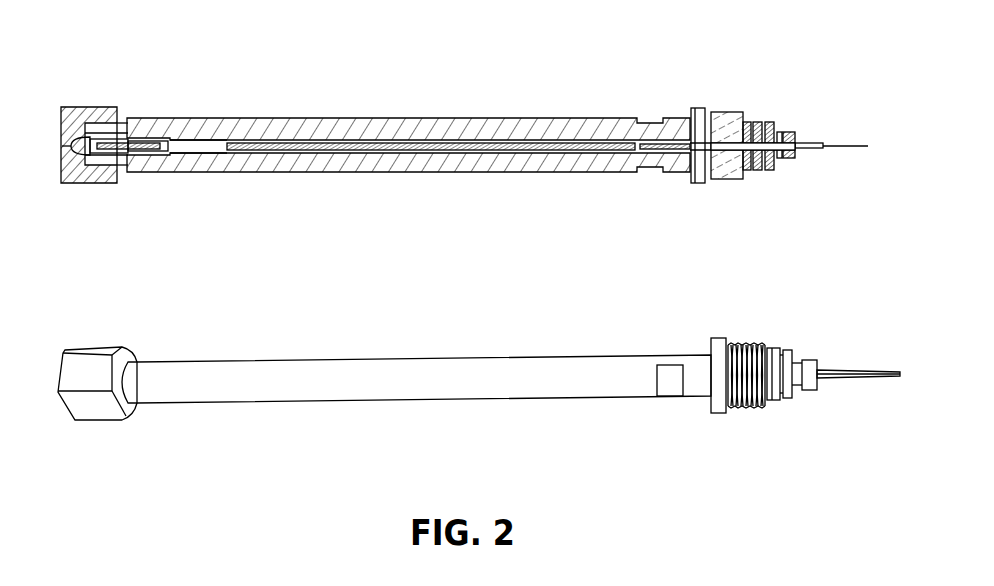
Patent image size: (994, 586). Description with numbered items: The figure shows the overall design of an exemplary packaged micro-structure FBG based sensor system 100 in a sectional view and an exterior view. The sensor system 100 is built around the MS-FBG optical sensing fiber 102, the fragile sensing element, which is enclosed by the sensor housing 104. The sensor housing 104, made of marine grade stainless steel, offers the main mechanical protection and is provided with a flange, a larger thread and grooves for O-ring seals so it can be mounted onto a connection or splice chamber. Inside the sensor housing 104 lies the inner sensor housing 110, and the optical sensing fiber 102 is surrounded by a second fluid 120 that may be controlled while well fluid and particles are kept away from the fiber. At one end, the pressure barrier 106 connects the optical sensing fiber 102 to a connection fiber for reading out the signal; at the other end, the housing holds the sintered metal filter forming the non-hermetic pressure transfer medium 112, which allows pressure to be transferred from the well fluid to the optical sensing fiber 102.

The sensor system 100 is at (136, 77).
The optical sensing fiber 102 is at (402, 139).
The sensor housing 104 is at (270, 116).
The pressure barrier 106 is at (741, 137).
The inner sensor housing 110 is at (461, 153).
The pressure transfer medium 112 is at (138, 159).
The second fluid 120 is at (211, 151).